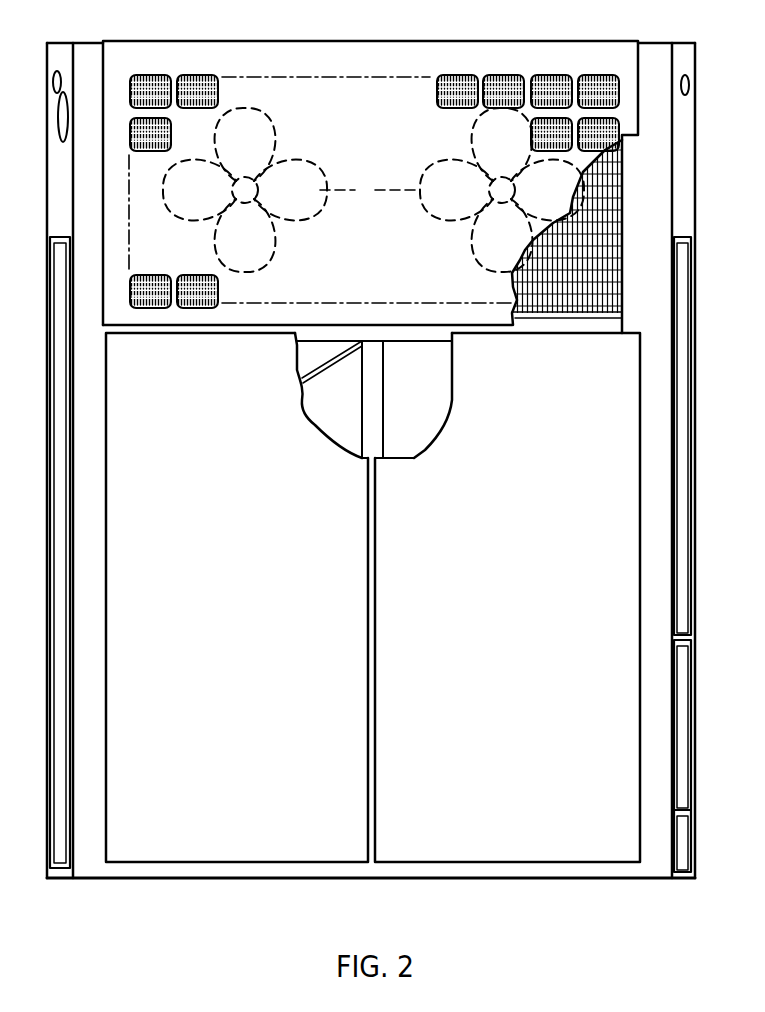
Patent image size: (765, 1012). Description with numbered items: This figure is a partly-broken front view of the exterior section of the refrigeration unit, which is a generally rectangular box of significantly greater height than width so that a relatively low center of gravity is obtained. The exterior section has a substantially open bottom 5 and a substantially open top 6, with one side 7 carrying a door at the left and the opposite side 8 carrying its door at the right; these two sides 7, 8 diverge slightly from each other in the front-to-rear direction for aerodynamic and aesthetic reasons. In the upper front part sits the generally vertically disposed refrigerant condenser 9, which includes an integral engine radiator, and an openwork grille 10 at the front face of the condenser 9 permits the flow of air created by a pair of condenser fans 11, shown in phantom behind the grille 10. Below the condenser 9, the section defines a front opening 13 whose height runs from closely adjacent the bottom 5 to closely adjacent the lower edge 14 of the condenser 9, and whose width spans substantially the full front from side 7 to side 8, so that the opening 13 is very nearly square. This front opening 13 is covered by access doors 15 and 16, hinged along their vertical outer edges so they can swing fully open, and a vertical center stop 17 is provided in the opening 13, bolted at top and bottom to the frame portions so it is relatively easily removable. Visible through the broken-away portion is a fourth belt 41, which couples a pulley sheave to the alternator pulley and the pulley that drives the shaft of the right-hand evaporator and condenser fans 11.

The bottom 5 is at (488, 880).
The top 6 is at (390, 41).
The side 7 is at (47, 207).
The opposite side 8 is at (683, 185).
The refrigerant condenser 9 is at (603, 257).
The openwork grille 10 is at (152, 75).
The condenser fans 11 is at (373, 190).
The front opening 13 is at (428, 396).
The lower edge 14 is at (606, 320).
The access door 15 is at (205, 497).
The access door 16 is at (480, 503).
The vertical center stop 17 is at (362, 419).
The fourth belt 41 is at (316, 378).